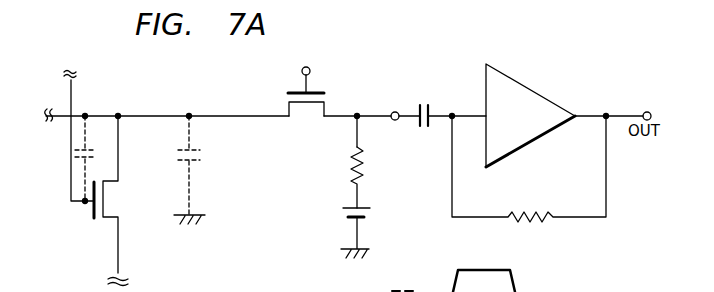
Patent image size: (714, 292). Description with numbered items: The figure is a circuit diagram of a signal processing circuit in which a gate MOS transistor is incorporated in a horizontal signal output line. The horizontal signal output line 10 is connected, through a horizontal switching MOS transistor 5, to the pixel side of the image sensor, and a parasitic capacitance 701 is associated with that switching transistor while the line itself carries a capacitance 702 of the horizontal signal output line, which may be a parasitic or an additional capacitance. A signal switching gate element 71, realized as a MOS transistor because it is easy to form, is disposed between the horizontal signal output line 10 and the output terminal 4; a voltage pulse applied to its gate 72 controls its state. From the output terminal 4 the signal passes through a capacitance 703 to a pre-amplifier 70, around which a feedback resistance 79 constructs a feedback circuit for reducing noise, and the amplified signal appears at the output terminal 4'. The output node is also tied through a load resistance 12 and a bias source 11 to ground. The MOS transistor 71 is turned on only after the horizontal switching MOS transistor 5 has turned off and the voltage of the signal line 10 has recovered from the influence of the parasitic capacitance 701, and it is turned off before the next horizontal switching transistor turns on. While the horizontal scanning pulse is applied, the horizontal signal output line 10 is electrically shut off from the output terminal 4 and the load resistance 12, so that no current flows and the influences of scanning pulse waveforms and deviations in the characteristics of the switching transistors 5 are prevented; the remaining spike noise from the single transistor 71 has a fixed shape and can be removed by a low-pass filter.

The output terminal 4 is at (392, 95).
The output terminal of amplified signal 4' is at (644, 94).
The horizontal switching MOS transistor 5 is at (120, 197).
The horizontal signal output line 10 is at (233, 115).
The bias voltage source 11 is at (374, 214).
The load resistance 12 is at (362, 160).
The pre-amplifier 70 is at (537, 92).
The signal switching gate element 71 is at (307, 105).
The gate 72 is at (310, 69).
The feedback resistance 79 is at (530, 225).
The parasitic capacitance 701 is at (97, 153).
The capacitance of the horizontal signal output line 702 is at (201, 156).
The capacitance 703 is at (425, 100).